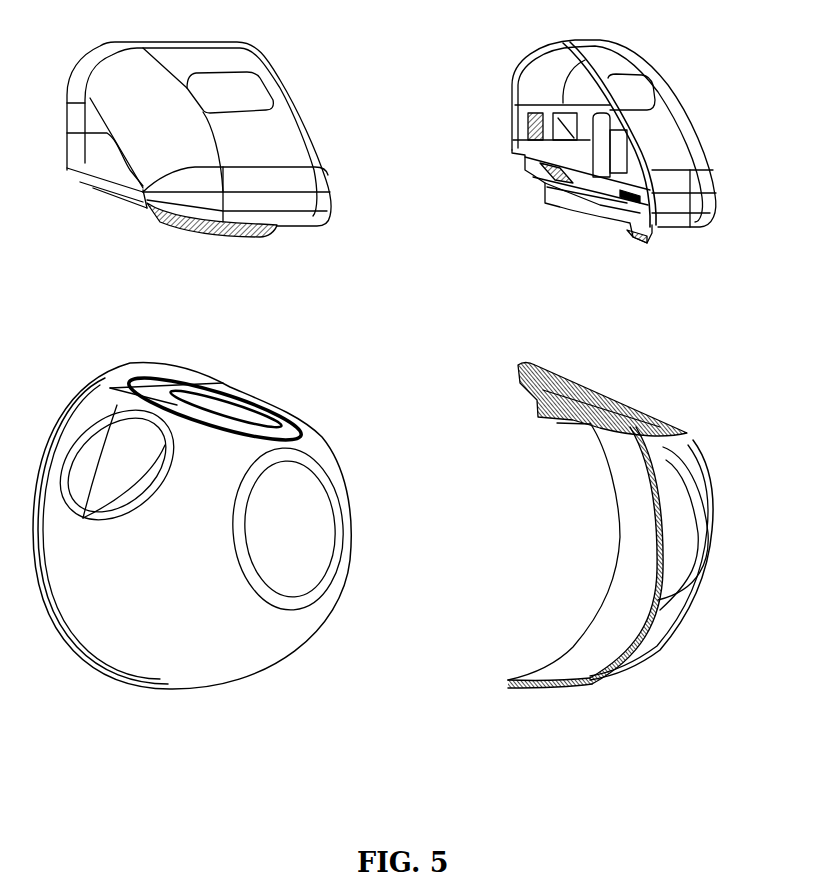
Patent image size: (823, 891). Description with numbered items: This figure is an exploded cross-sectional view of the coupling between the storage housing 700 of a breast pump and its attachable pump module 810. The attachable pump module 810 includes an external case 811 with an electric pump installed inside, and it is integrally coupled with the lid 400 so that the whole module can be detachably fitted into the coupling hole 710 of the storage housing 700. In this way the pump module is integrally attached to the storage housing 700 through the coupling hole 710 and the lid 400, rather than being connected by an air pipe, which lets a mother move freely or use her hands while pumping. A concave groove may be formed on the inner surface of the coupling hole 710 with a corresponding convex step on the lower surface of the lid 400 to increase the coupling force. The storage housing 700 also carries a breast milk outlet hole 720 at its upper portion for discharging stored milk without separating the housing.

The lid 400 is at (253, 238).
The storage housing 700 is at (217, 675).
The coupling hole 710 is at (253, 395).
The breast milk outlet hole 720 is at (518, 368).
The attachable pump module 810 is at (338, 112).
The external case 811 is at (275, 73).